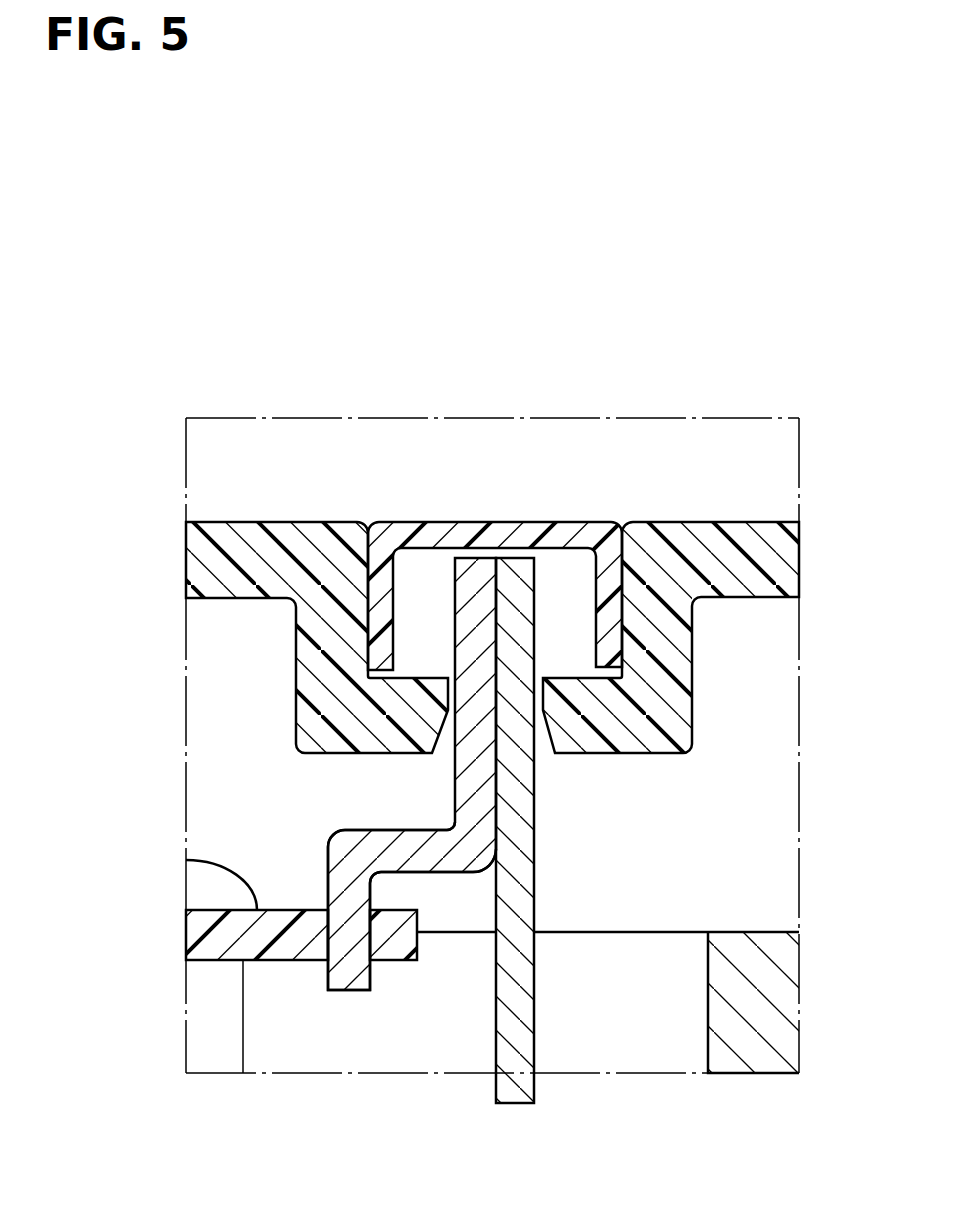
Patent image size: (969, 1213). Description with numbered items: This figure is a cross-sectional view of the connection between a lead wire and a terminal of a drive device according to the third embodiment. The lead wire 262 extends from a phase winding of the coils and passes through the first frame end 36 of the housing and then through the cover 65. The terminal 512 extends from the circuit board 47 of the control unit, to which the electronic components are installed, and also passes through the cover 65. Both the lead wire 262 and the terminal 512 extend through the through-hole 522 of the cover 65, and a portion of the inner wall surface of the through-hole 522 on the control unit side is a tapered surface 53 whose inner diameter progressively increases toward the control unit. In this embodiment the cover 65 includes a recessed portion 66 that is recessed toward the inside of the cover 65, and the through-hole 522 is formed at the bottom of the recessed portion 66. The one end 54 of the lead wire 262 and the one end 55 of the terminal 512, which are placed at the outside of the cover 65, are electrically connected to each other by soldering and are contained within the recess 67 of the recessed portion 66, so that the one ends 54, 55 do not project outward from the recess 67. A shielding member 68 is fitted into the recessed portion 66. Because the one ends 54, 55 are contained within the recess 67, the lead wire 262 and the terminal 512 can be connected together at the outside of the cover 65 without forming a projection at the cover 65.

The first frame end 36 is at (790, 960).
The circuit board 47 is at (217, 952).
The tapered surface 53 is at (545, 753).
The one end of lead wire 54 is at (517, 558).
The one end of terminal 55 is at (473, 558).
The cover 65 is at (792, 565).
The recessed portion 66 is at (313, 663).
The recess 67 is at (428, 672).
The shielding member 68 is at (407, 530).
The lead wire 262 is at (520, 826).
The terminal 512 is at (347, 860).
The through-hole 522 is at (528, 678).